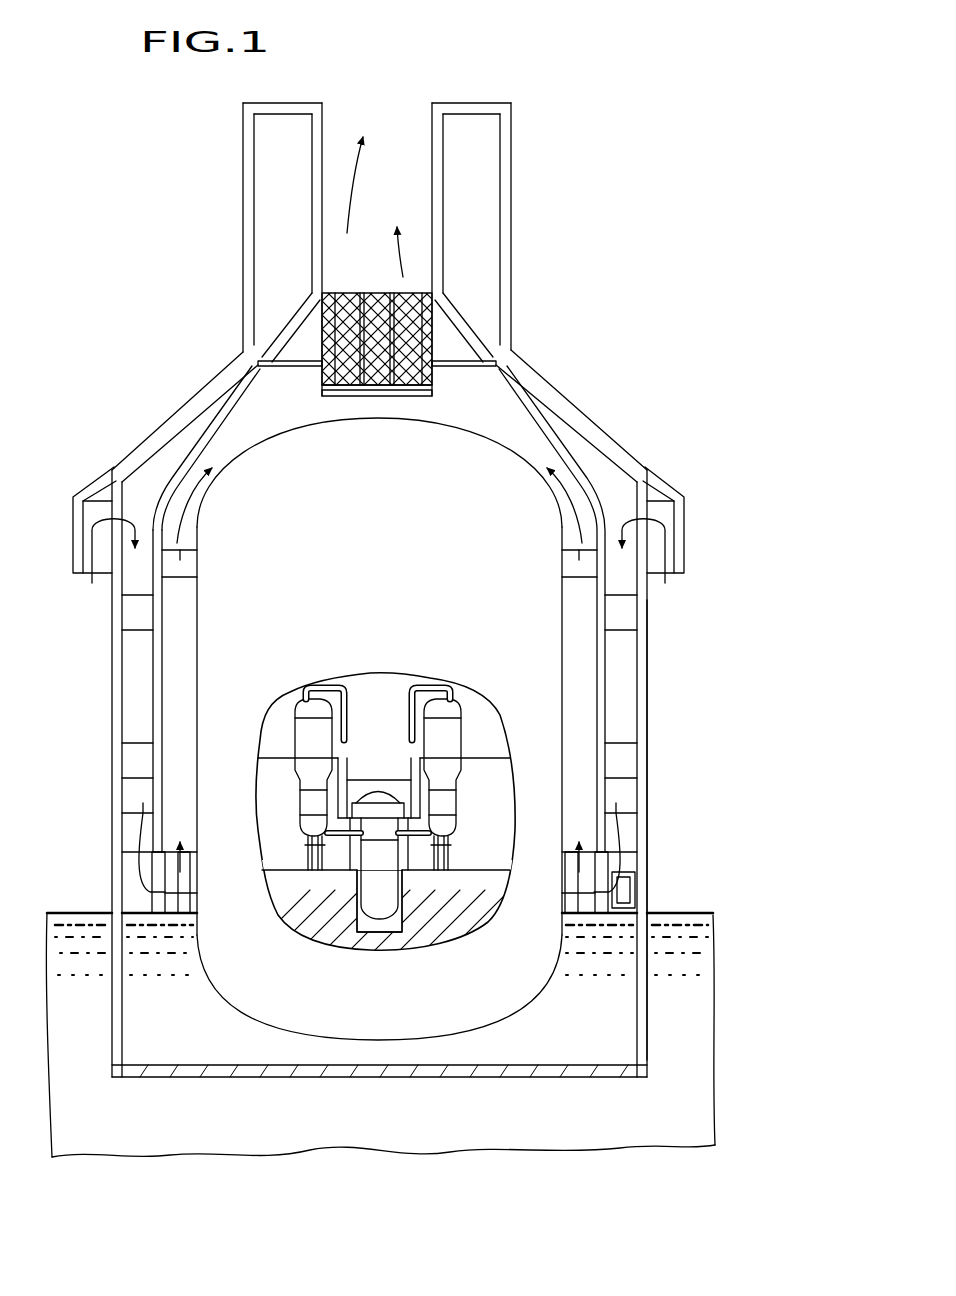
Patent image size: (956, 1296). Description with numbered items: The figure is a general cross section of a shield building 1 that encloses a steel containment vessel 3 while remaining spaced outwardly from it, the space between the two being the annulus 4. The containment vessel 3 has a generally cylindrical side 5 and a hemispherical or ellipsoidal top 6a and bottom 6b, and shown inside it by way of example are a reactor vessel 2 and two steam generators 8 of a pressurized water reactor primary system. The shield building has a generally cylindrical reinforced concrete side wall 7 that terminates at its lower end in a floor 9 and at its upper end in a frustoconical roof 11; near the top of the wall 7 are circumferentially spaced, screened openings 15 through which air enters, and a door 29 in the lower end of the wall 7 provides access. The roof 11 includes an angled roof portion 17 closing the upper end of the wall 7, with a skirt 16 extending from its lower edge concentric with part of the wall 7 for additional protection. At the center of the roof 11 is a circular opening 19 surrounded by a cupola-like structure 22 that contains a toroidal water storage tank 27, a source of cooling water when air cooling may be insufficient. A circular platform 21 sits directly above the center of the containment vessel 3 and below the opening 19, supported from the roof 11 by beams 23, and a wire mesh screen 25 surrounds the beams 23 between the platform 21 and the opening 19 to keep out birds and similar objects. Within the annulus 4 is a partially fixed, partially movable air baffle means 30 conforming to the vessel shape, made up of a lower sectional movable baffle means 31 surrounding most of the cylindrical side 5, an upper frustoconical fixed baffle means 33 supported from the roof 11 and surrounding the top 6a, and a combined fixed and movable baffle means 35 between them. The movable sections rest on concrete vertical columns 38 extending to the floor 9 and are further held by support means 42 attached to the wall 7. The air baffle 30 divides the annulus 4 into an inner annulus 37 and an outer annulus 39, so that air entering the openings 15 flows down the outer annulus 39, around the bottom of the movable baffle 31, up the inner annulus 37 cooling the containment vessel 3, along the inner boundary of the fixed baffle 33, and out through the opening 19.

The shield building 1 is at (682, 797).
The reactor vessel 2 is at (387, 905).
The containment vessel 3 is at (537, 392).
The annulus 4 is at (359, 882).
The cylindrical side 5 is at (563, 678).
The top 6a is at (395, 425).
The bottom 6b is at (360, 1040).
The side wall 7 is at (648, 718).
The steam generators 8 is at (322, 730).
The floor 9 is at (383, 1078).
The frustoconical roof 11 is at (165, 420).
The openings 15 is at (655, 498).
The skirt 16 is at (73, 543).
The angled roof portion 17 is at (80, 509).
The circular opening 19 is at (430, 294).
The circular platform 21 is at (428, 392).
The cupola-like structure 22 is at (346, 263).
The beams 23 is at (322, 374).
The wire mesh screen 25 is at (322, 322).
The water storage tank 27 is at (498, 142).
The door 29 is at (638, 888).
The air baffle means 30 is at (174, 609).
The movable baffle means 31 is at (150, 673).
The fixed baffle means 33 is at (217, 422).
The combined fixed and movable baffle means 35 is at (168, 574).
The inner annulus 37 is at (178, 755).
The vertical columns 38 is at (197, 893).
The outer annulus 39 is at (133, 715).
The support means 42 is at (112, 618).